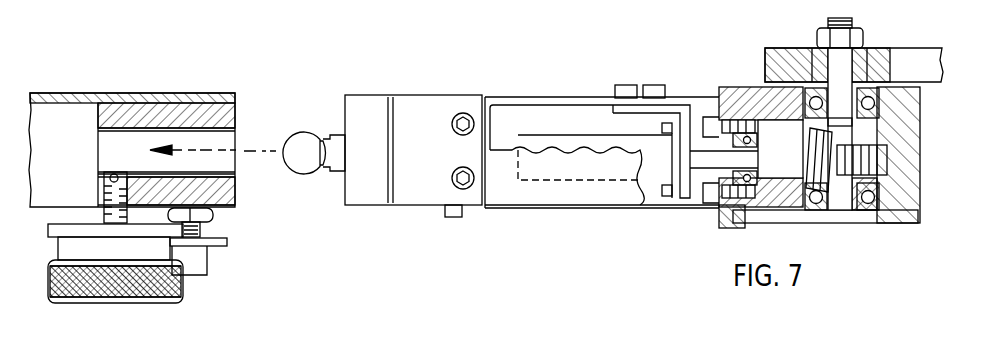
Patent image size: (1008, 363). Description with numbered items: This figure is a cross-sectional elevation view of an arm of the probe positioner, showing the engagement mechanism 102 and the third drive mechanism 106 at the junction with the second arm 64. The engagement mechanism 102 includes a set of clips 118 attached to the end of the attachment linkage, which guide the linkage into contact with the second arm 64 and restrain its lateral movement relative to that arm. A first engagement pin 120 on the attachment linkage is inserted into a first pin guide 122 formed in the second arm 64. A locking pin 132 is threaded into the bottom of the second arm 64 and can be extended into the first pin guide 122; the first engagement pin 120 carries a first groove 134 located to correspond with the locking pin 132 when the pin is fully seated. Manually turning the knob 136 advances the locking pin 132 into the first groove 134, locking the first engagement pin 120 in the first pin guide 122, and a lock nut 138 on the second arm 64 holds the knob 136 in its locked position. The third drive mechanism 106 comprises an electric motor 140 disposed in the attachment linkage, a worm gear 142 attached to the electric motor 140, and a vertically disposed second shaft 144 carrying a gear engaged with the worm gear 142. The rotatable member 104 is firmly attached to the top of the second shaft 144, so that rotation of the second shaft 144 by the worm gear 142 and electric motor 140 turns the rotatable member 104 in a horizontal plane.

The second arm 64 is at (68, 93).
The first pin guide 122 is at (222, 138).
The locking pin 132 is at (110, 202).
The lock nut 138 is at (200, 260).
The knob 136 is at (133, 285).
The engagement mechanism 102 is at (232, 276).
The first engagement pin 120 is at (300, 132).
The first groove 134 is at (322, 134).
The clips 118 is at (407, 105).
The electric motor 140 is at (648, 160).
The third drive mechanism 106 is at (804, 132).
The second shaft 144 is at (843, 122).
The rotatable member 104 is at (903, 58).
The worm gear 142 is at (787, 162).